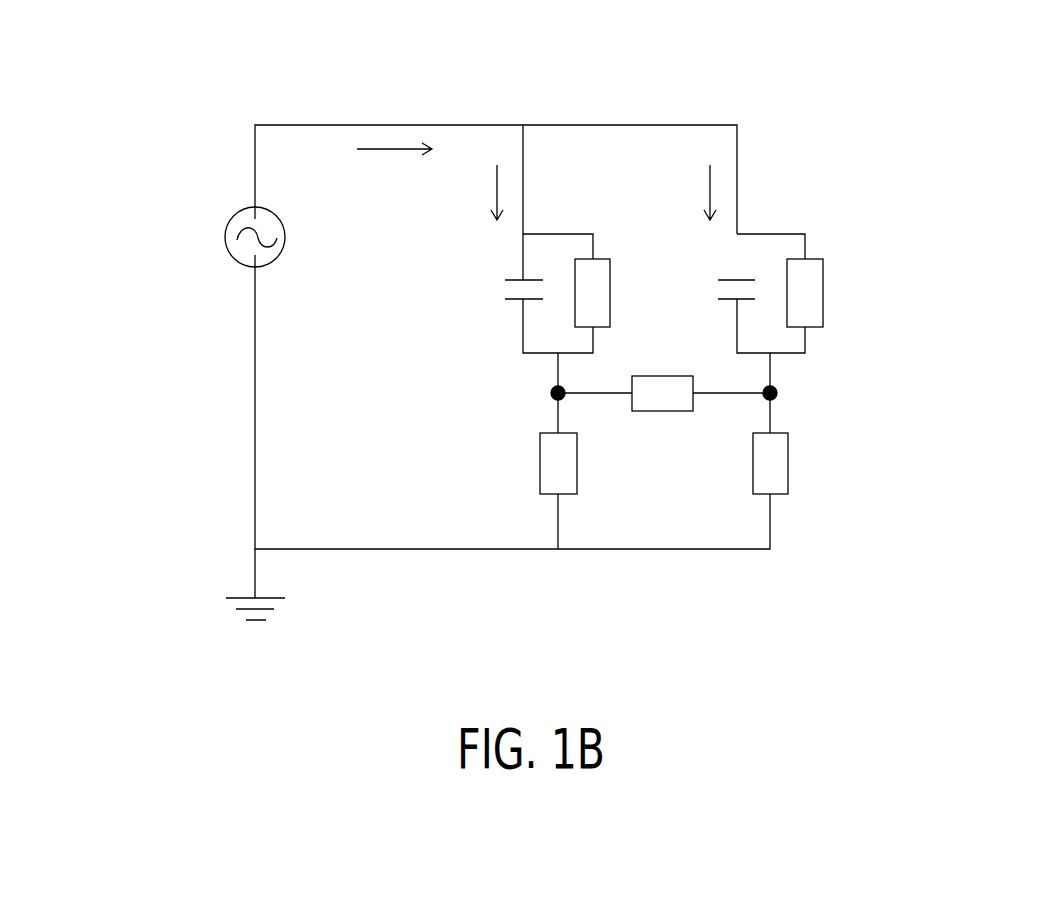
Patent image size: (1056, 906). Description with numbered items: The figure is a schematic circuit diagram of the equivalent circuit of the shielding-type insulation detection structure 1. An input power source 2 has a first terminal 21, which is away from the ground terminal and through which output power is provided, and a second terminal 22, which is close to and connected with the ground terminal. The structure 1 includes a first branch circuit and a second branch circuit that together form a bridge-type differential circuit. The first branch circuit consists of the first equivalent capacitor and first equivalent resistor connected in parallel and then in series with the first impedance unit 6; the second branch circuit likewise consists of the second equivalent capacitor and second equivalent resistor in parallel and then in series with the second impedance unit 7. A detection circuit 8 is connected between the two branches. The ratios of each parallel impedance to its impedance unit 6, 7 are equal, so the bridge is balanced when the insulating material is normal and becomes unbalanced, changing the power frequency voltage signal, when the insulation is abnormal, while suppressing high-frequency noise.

The shielding-type insulation detection structure 1 is at (602, 335).
The input power source 2 is at (228, 249).
The first terminal 21 is at (258, 208).
The second terminal 22 is at (259, 268).
The first impedance unit 6 is at (572, 444).
The second impedance unit 7 is at (782, 445).
The detection circuit 8 is at (657, 380).